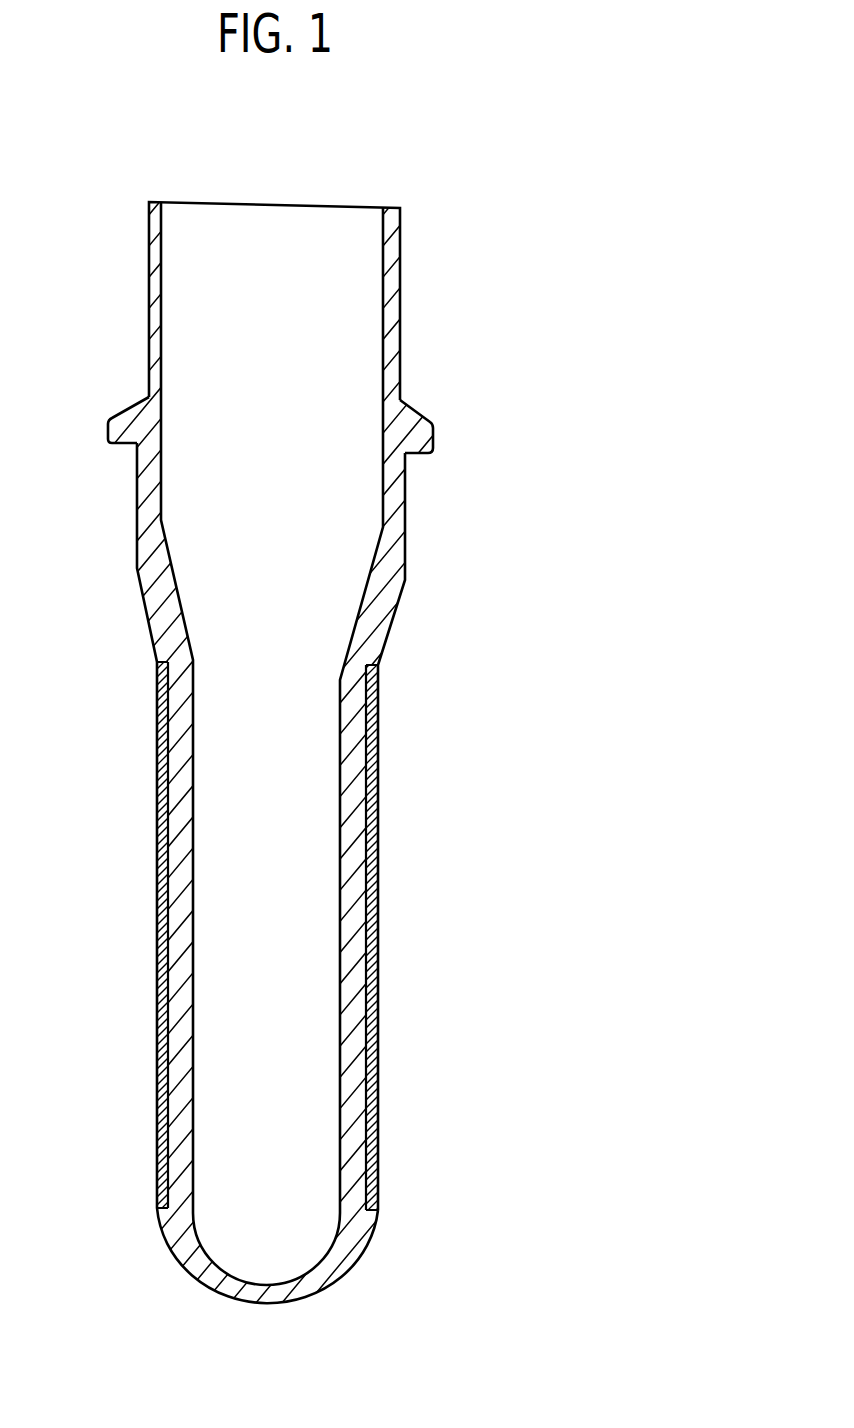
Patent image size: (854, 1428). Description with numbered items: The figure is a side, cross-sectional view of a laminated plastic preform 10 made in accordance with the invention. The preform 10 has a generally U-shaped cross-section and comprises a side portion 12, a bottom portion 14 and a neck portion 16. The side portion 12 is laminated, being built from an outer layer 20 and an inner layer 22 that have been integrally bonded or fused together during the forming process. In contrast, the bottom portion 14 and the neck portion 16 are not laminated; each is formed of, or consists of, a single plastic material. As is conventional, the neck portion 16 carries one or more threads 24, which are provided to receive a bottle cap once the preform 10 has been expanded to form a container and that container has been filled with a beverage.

The laminated preform 10 is at (492, 136).
The side portion 12 is at (393, 921).
The bottom portion 14 is at (184, 1291).
The neck portion 16 is at (123, 492).
The outer layer 20 is at (158, 902).
The inner layer 22 is at (175, 1075).
The threads 24 is at (427, 420).